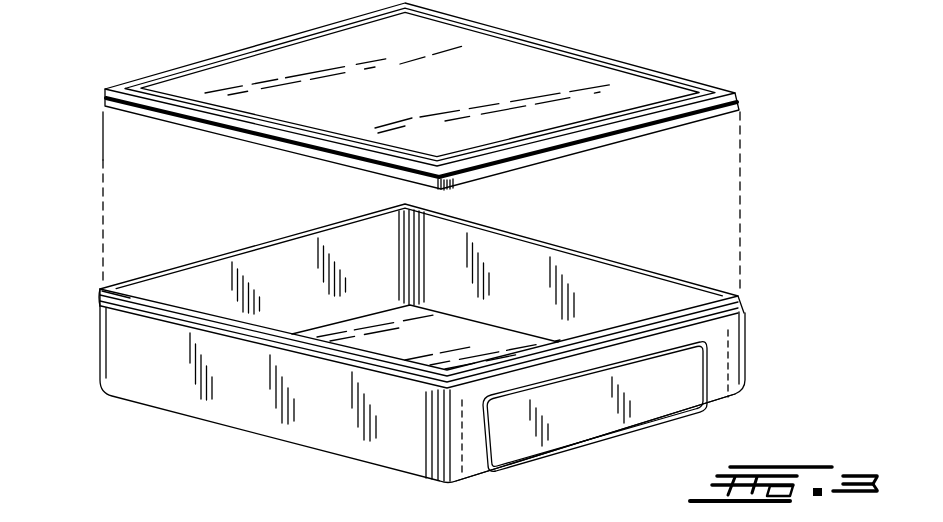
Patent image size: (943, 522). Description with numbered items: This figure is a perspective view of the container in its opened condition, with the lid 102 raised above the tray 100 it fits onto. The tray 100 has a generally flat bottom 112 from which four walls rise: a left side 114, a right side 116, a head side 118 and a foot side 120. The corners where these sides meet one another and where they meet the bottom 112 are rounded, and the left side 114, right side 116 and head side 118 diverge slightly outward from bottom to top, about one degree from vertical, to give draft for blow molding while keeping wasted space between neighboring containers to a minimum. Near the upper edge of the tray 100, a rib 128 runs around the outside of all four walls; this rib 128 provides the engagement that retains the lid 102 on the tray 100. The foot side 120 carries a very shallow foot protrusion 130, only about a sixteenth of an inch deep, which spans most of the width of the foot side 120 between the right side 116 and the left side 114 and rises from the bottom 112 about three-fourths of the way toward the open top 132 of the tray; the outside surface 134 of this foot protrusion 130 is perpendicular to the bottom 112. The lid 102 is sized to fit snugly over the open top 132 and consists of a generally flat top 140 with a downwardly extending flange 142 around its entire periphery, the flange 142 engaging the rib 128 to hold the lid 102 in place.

The tray 100 is at (226, 446).
The lid 102 is at (246, 32).
The bottom 112 is at (430, 354).
The left side 114 is at (385, 452).
The right side 116 is at (553, 243).
The head side 118 is at (312, 303).
The foot side 120 is at (580, 433).
The rib 128 is at (134, 313).
The foot protrusion 130 is at (650, 410).
The open top 132 is at (362, 238).
The outside surface 134 is at (604, 418).
The flat top 140 is at (431, 99).
The flange 142 is at (622, 138).